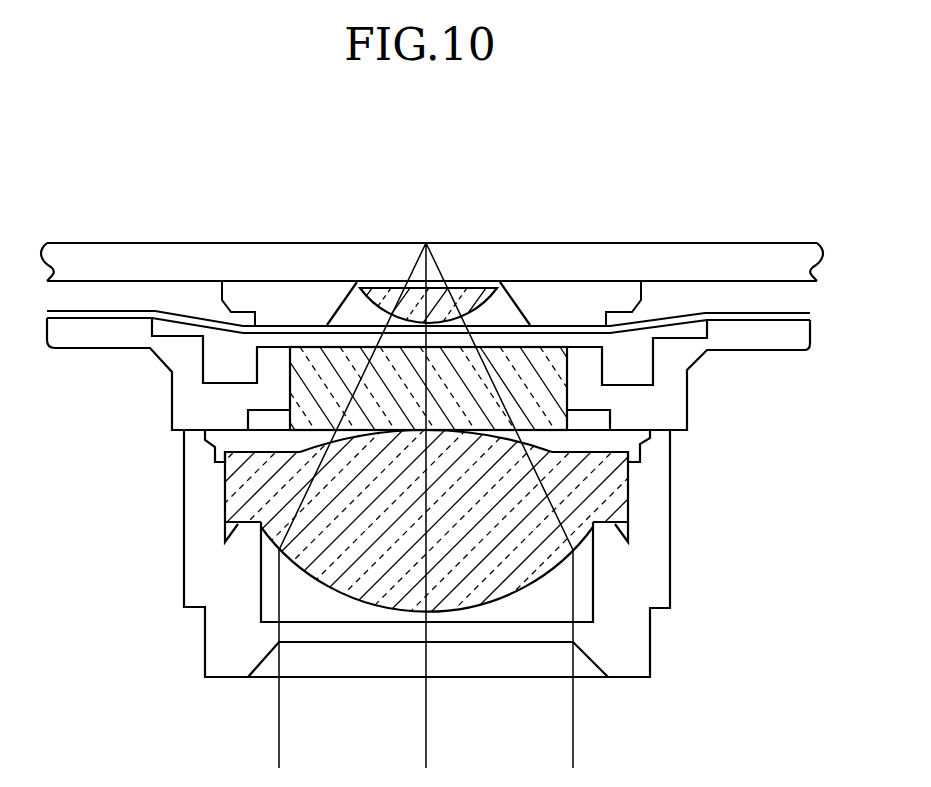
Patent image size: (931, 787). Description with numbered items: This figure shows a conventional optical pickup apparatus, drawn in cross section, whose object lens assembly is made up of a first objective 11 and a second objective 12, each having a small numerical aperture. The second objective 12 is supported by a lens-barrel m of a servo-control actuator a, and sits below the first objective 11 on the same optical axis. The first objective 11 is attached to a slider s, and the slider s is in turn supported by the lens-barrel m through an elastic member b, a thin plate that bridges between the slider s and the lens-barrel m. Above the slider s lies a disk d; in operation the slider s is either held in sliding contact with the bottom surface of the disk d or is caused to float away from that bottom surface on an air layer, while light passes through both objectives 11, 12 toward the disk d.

The first objective 11 is at (468, 300).
The second objective 12 is at (322, 577).
The slider s is at (568, 298).
The elastic member b is at (670, 317).
The disk d is at (778, 260).
The servo-control actuator a is at (689, 380).
The lens-barrel m is at (688, 408).